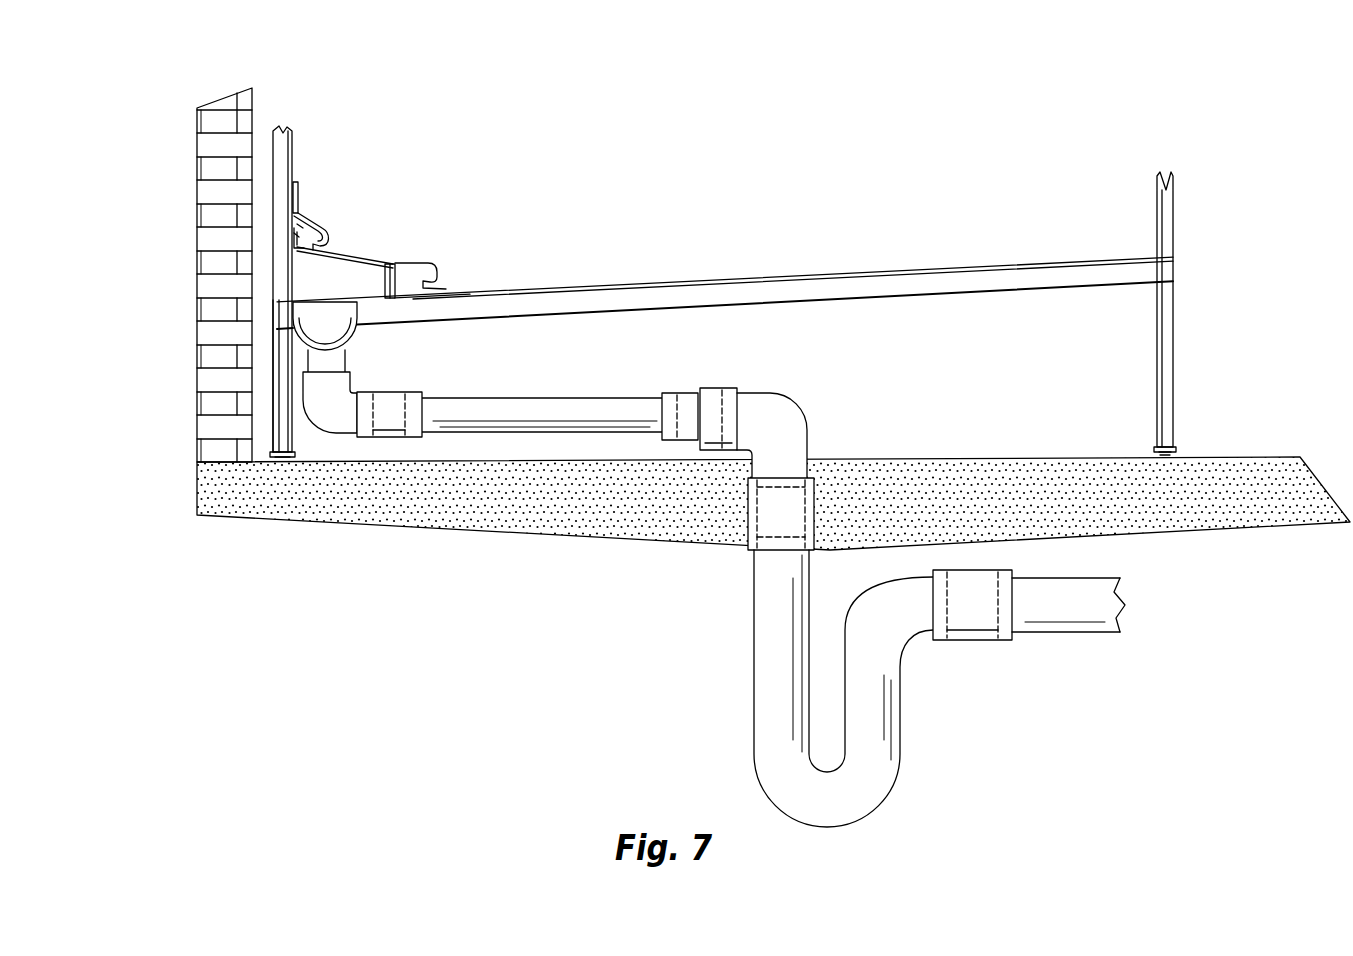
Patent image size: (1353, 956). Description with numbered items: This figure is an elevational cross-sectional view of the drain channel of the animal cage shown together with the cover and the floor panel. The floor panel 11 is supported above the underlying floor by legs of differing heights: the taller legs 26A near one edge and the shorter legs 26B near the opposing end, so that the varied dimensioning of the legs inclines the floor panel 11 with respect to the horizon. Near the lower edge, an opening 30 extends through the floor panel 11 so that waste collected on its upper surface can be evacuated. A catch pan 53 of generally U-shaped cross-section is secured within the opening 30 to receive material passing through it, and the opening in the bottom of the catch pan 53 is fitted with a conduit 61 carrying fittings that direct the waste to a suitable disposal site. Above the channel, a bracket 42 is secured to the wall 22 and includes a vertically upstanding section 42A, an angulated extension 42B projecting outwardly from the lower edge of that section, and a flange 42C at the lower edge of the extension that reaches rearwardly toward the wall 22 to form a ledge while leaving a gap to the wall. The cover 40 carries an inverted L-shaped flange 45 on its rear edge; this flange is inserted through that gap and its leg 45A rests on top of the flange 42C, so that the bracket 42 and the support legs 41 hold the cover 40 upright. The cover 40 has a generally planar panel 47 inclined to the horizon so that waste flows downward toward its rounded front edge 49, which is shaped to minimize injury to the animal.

The floor panel 11 is at (836, 274).
The wall 22 is at (282, 131).
The legs 26A is at (1153, 370).
The legs 26B is at (307, 402).
The opening 30 is at (355, 316).
The cover 40 is at (370, 258).
The support legs 41 is at (417, 298).
The bracket 42 is at (375, 166).
The upstanding section 42A is at (298, 183).
The angulated extension 42B is at (307, 220).
The flange 42C is at (320, 245).
The flange 45 is at (297, 235).
The leg 45A is at (300, 227).
The panel 47 is at (386, 262).
The front edge 49 is at (446, 289).
The catch pan 53 is at (353, 337).
The conduit 61 is at (348, 368).